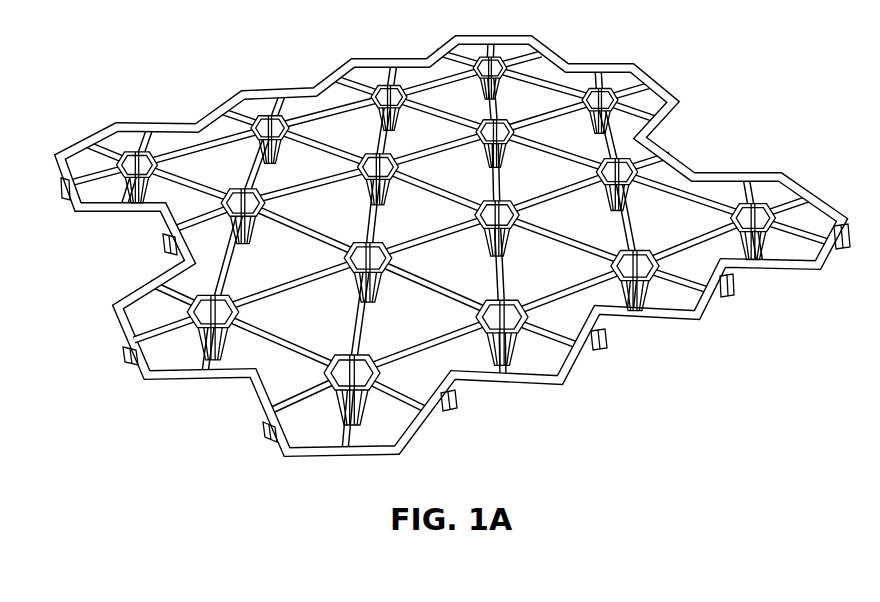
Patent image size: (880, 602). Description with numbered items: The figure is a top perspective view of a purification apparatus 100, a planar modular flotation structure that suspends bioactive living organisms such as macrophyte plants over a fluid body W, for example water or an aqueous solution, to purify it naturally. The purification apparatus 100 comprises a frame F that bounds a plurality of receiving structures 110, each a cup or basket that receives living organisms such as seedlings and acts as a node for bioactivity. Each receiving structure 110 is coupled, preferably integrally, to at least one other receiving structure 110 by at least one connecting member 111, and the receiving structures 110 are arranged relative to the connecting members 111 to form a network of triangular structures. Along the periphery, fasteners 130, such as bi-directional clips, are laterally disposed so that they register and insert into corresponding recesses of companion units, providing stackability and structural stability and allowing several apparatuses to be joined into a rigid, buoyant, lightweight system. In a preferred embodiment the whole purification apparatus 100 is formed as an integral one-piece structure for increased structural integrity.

The purification apparatus 100 is at (452, 249).
The receiving structure 110 is at (205, 291).
The connecting member 111 is at (162, 323).
The fastener 130 is at (128, 360).
The frame F is at (200, 382).
The fluid body W is at (682, 429).